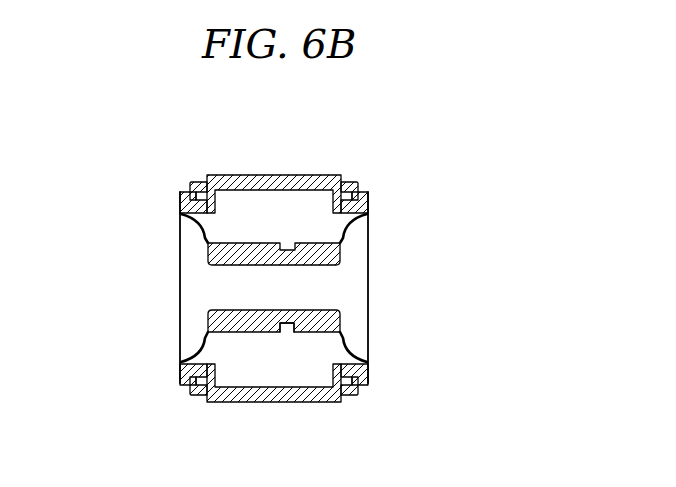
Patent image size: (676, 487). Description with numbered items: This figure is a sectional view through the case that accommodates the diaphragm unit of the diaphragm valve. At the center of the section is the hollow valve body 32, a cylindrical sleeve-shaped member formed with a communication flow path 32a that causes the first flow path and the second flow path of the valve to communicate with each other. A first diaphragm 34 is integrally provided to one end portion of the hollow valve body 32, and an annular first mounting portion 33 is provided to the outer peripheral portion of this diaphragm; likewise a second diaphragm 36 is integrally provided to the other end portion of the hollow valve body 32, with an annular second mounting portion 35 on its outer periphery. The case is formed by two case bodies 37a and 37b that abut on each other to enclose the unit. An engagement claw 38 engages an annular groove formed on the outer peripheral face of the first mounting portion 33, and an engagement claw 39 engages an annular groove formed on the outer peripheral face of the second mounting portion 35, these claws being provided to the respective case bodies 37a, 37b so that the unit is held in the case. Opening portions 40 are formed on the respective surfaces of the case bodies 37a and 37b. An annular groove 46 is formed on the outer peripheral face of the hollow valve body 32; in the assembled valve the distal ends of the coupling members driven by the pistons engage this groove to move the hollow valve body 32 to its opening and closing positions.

The hollow valve body 32 is at (352, 322).
The communication flow path 32a is at (330, 290).
The first mounting portion 33 is at (367, 203).
The first diaphragm 34 is at (345, 233).
The second mounting portion 35 is at (185, 203).
The second diaphragm 36 is at (203, 233).
The case body 37a is at (360, 390).
The case body 37b is at (199, 182).
The engagement claw 38 is at (358, 183).
The engagement claw 39 is at (187, 375).
The opening portion 40 is at (271, 181).
The annular groove 46 is at (286, 331).